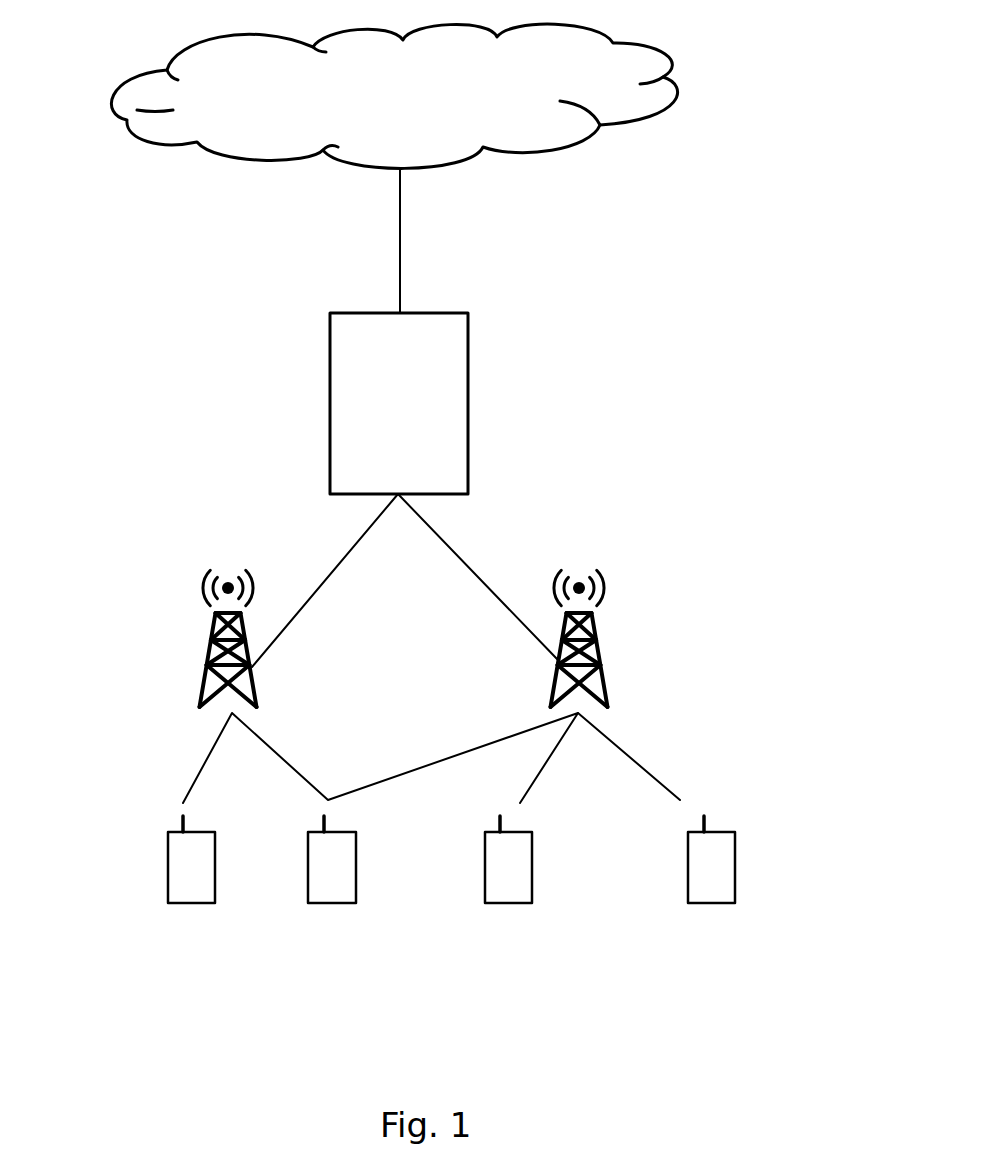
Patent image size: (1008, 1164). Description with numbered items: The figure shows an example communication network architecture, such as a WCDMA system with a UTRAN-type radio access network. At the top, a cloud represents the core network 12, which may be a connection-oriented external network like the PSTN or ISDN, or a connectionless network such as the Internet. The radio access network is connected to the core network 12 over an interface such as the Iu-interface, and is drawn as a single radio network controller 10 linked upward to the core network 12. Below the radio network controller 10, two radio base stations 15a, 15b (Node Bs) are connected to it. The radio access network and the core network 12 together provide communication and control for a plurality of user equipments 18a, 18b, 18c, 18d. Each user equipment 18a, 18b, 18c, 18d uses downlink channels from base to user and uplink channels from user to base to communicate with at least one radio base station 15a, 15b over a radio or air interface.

The core network 12 is at (683, 82).
The radio network controller 10 is at (477, 397).
The radio base station 15a is at (217, 650).
The radio base station 15b is at (607, 652).
The user equipment 18a is at (177, 870).
The user equipment 18b is at (333, 904).
The user equipment 18c is at (508, 904).
The user equipment 18d is at (745, 870).